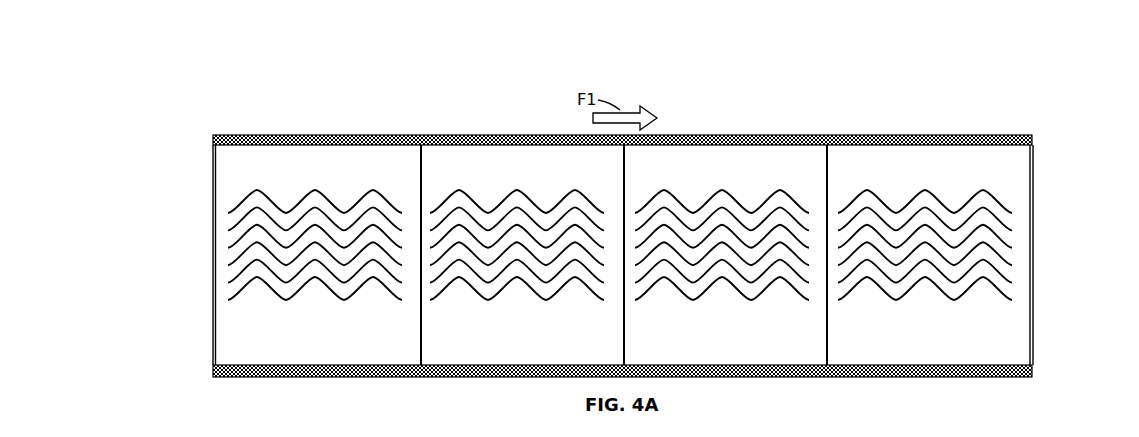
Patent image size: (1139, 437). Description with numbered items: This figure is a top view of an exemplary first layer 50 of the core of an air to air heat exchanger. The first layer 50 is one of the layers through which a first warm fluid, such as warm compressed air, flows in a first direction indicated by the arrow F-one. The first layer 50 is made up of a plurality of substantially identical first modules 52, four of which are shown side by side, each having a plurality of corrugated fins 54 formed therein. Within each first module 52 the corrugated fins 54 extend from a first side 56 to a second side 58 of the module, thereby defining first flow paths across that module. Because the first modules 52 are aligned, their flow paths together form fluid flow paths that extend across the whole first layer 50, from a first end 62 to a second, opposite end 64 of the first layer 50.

The first layer 50 is at (203, 103).
The first module 52 is at (333, 128).
The corrugated fins 54 is at (750, 302).
The first side 56 is at (422, 330).
The second side 58 is at (622, 330).
The first end 62 is at (210, 320).
The second end 64 is at (1034, 185).